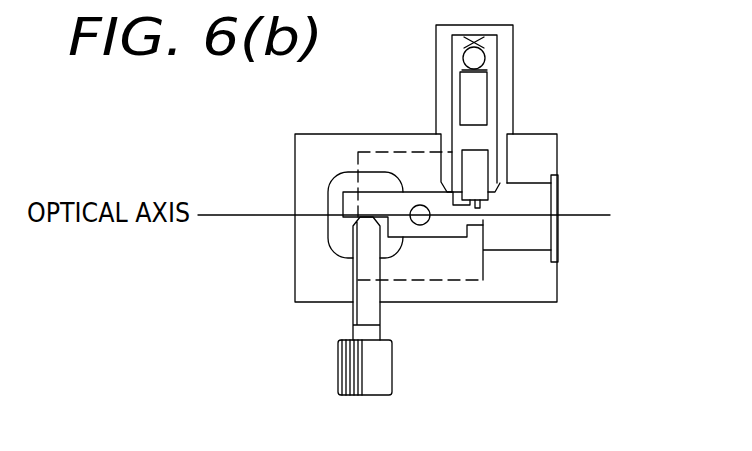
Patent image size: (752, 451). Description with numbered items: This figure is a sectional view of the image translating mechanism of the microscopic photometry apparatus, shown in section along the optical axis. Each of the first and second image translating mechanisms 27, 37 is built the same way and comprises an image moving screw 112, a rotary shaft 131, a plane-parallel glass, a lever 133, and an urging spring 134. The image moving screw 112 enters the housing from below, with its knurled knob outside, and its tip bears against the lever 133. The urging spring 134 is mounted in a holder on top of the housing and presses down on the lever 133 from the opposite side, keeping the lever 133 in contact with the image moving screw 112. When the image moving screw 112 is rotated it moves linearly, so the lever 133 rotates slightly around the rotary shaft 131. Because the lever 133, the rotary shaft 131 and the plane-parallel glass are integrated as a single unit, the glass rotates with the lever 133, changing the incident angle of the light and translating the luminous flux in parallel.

The first image translating mechanism 27 is at (618, 165).
The second image translating mechanism 37 is at (545, 183).
The rotary shaft 131 is at (426, 222).
The lever 133 is at (387, 206).
The urging spring 134 is at (482, 100).
The image moving screw 112 is at (383, 363).